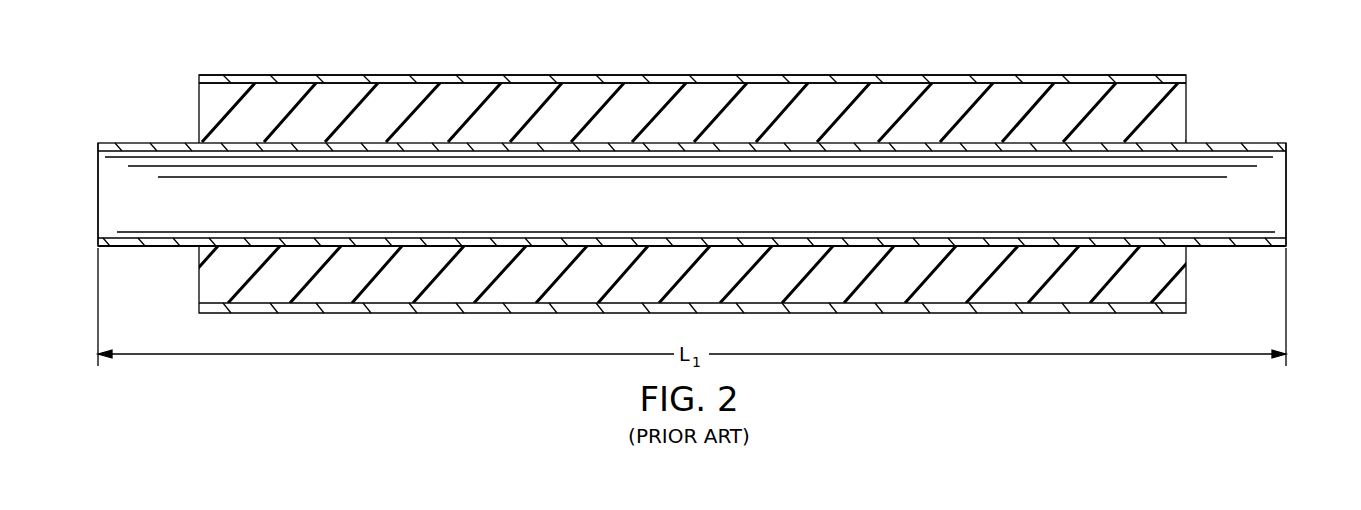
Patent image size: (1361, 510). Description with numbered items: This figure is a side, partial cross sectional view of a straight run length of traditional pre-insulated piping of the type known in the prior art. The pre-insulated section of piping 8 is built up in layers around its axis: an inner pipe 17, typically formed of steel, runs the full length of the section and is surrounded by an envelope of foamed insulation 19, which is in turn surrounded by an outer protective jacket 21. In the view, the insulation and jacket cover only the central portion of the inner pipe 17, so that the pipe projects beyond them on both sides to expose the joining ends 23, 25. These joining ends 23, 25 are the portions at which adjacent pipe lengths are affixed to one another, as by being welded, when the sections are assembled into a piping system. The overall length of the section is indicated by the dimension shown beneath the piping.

The pre-insulated section of piping 8 is at (561, 53).
The inner pipe 17 is at (133, 142).
The envelope of foamed insulation 19 is at (1177, 100).
The outer protective jacket 21 is at (797, 74).
The joining end 23 is at (97, 194).
The joining end 25 is at (1287, 192).